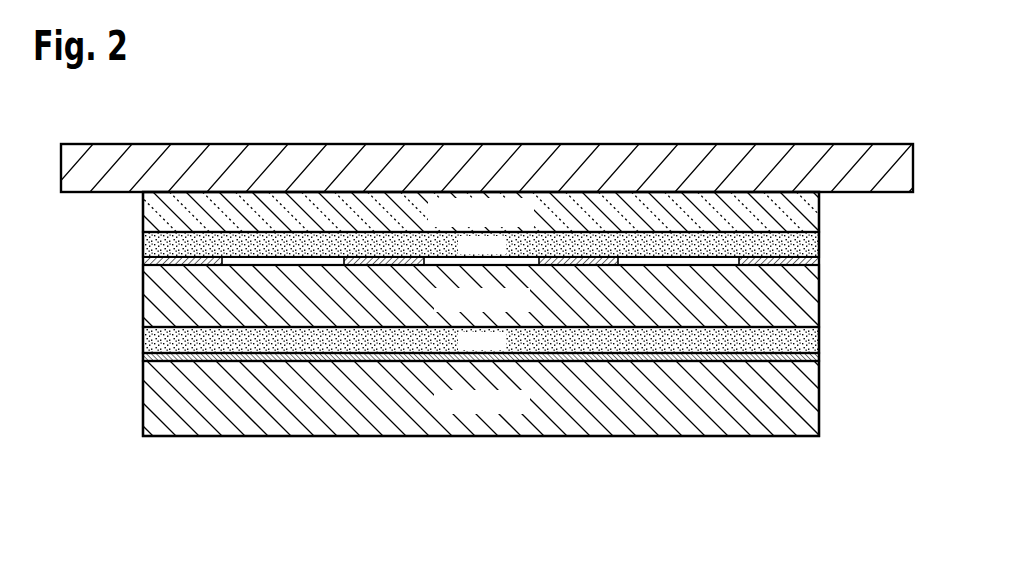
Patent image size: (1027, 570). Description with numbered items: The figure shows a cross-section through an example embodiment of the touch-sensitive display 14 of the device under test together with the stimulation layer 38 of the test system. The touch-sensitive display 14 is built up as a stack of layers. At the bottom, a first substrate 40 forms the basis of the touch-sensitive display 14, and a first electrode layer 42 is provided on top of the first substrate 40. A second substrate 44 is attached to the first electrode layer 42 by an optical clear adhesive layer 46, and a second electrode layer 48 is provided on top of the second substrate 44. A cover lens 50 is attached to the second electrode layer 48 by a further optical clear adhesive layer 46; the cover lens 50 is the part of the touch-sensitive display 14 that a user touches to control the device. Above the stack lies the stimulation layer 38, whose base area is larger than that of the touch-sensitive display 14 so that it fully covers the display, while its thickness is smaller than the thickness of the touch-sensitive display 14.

The touch-sensitive display 14 is at (488, 438).
The stimulation layer 38 is at (465, 155).
The first substrate 40 is at (808, 405).
The first electrode layer 42 is at (808, 357).
The second substrate 44 is at (808, 291).
The optical clear adhesive layer 46 is at (165, 244).
The second electrode layer 48 is at (808, 259).
The cover lens 50 is at (163, 211).